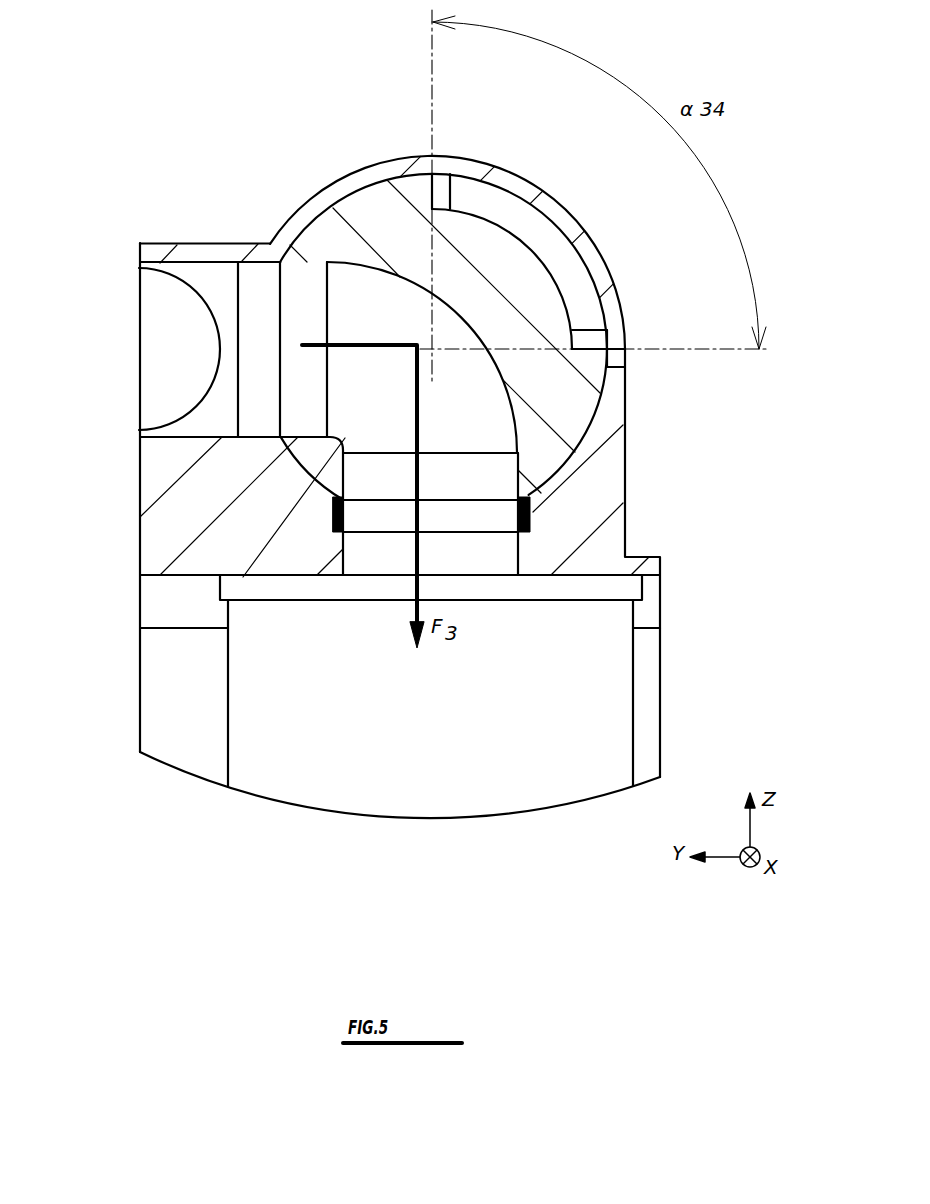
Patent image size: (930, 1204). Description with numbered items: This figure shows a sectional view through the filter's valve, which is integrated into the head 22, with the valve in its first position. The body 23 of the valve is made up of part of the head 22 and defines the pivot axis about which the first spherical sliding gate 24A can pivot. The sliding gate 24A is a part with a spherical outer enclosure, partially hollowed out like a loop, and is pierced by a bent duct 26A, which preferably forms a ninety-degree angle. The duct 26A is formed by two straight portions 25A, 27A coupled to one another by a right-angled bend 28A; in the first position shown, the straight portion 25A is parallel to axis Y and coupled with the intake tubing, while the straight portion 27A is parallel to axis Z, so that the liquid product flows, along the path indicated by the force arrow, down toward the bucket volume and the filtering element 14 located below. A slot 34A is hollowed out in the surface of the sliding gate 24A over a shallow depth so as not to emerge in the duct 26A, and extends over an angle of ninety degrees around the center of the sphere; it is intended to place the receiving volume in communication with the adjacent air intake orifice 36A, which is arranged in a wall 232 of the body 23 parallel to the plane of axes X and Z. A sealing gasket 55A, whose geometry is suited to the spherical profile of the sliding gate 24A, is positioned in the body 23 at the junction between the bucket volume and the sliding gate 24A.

The filtering element 14 is at (610, 710).
The head 22 is at (440, 443).
The body 23 is at (190, 500).
The wall 232 is at (613, 393).
The first spherical sliding gate 24A is at (443, 296).
The straight portion 25A is at (302, 403).
The duct 26A is at (376, 487).
The straight portion 27A is at (375, 473).
The right-angled bend 28A is at (360, 413).
The slot 34A is at (493, 201).
The air intake orifice 36A is at (625, 344).
The sealing gasket 55A is at (532, 513).